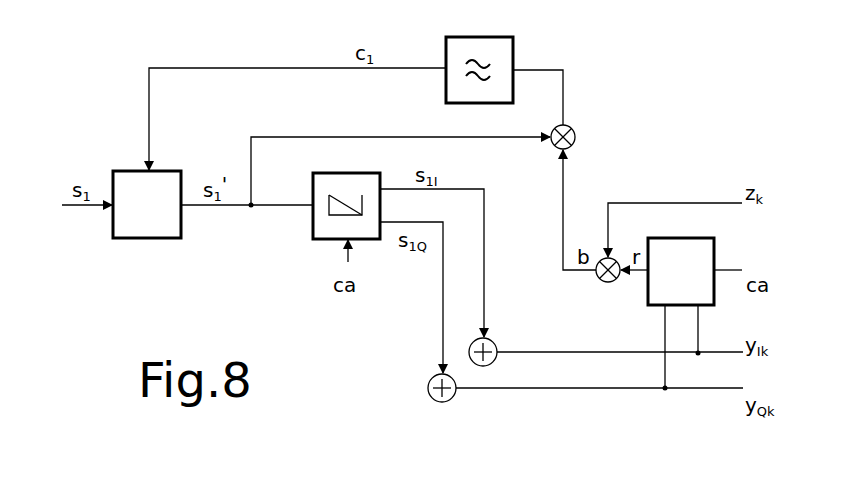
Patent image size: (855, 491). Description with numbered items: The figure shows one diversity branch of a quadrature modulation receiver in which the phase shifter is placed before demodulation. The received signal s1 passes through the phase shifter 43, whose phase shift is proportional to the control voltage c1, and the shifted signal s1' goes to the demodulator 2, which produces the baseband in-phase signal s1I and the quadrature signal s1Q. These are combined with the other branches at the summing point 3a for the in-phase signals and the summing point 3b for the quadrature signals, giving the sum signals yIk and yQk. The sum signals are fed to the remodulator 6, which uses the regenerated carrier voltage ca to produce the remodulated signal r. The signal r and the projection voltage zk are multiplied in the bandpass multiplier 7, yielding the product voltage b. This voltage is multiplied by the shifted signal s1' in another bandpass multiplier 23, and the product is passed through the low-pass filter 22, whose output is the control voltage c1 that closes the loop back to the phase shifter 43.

The phase shifter 43 is at (176, 238).
The demodulator 2 is at (316, 239).
The low-pass filter 22 is at (513, 46).
The multiplier 23 is at (575, 137).
The multiplier 7 is at (610, 282).
The remodulator 6 is at (714, 252).
The summing point 3a is at (493, 341).
The summing point 3b is at (450, 400).